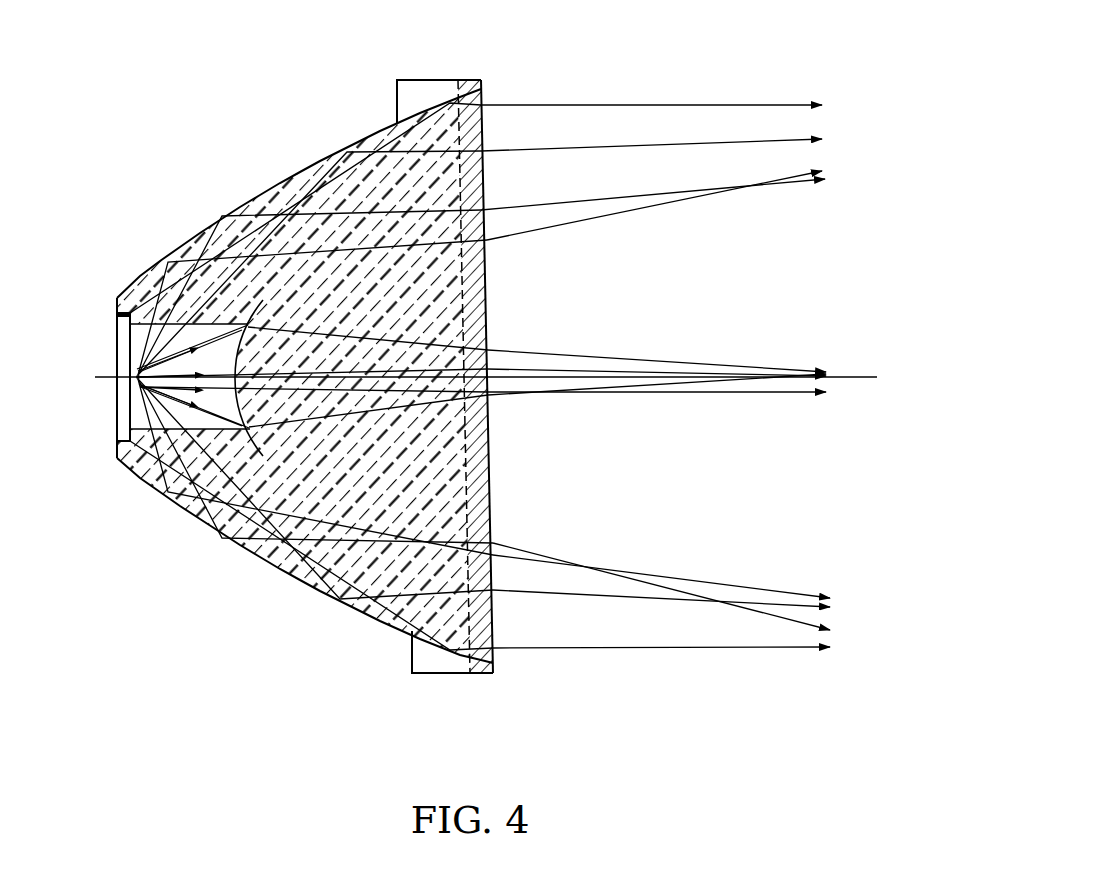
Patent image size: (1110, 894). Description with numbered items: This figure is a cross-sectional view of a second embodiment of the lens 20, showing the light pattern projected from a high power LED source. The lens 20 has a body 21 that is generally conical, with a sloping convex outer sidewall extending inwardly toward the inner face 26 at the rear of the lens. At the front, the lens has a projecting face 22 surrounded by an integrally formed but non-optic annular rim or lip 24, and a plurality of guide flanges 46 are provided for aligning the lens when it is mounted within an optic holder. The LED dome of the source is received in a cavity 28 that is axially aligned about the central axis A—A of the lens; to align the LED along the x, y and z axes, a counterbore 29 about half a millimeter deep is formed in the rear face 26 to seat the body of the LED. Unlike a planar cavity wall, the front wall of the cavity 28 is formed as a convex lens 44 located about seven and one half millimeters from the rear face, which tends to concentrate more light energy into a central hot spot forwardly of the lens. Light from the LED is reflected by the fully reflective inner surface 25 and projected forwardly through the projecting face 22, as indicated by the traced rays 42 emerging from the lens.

The lens 20 is at (474, 376).
The body 21 is at (263, 192).
The front or projecting face 22 is at (492, 283).
The annular rim or lip 24 is at (486, 674).
The fully reflective inner surface 25 is at (284, 568).
The inner face 26 is at (118, 296).
The cavity 28 is at (130, 341).
The counterbore 29 is at (115, 312).
The lower light rays 42 is at (160, 426).
The convex lens 44 is at (136, 388).
The guide flanges 46 is at (422, 80).